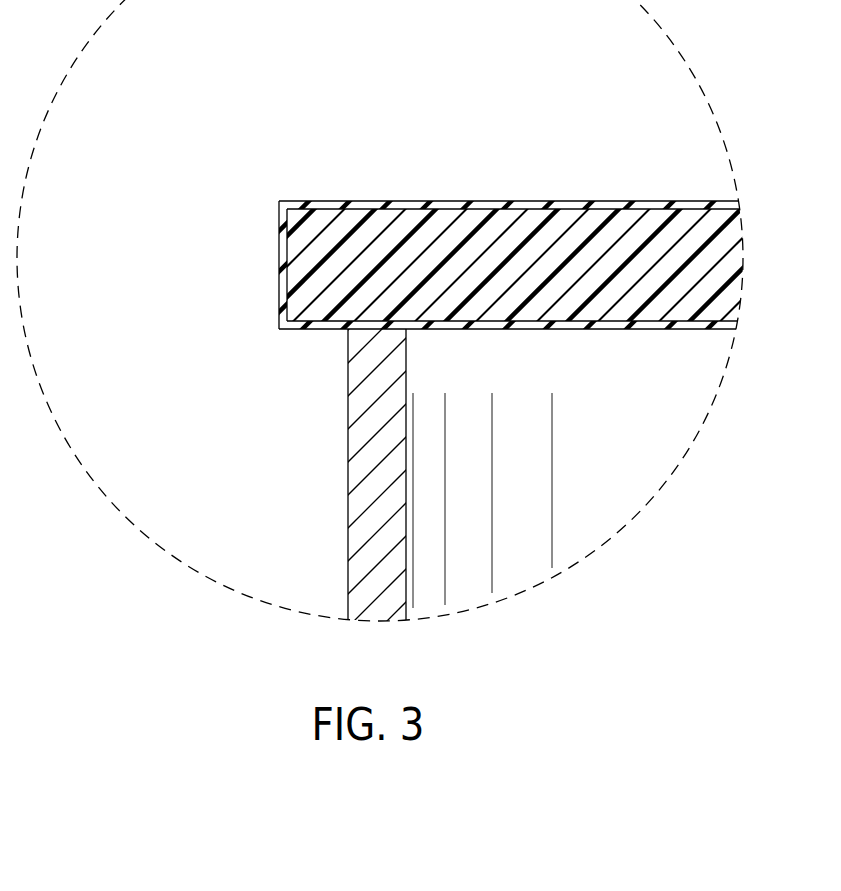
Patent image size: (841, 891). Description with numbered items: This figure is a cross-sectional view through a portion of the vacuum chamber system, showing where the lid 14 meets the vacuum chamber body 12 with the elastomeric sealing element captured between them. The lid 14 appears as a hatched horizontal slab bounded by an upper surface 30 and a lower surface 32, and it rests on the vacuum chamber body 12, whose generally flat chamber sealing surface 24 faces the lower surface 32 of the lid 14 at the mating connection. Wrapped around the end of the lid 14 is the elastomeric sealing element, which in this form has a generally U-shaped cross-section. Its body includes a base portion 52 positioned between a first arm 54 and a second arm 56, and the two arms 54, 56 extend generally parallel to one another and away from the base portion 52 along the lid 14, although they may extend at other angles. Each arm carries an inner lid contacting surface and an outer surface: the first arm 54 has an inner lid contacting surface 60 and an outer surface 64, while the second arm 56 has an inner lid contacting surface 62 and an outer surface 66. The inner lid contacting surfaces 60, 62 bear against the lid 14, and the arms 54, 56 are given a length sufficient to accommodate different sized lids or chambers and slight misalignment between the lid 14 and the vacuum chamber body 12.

The vacuum chamber body 12 is at (362, 503).
The lid 14 is at (625, 222).
The chamber sealing surface 24 is at (384, 330).
The upper surface 30 is at (572, 207).
The lower surface 32 is at (600, 322).
The base portion 52 is at (280, 263).
The first arm 54 is at (460, 329).
The second arm 56 is at (447, 201).
The inner lid contacting surface 60 is at (300, 310).
The inner lid contacting surface 62 is at (323, 222).
The outer surface 64 is at (320, 330).
The outer surface 66 is at (367, 200).